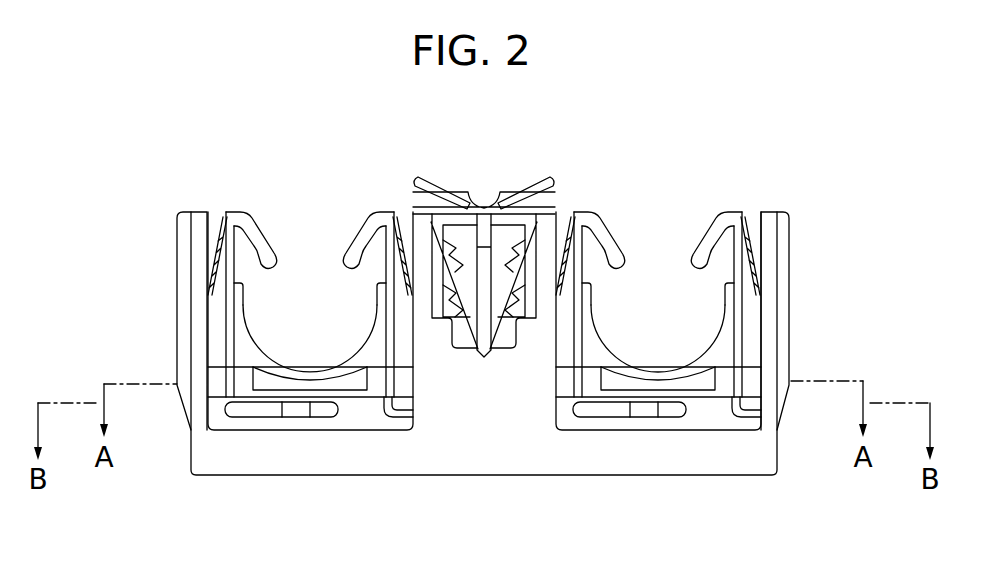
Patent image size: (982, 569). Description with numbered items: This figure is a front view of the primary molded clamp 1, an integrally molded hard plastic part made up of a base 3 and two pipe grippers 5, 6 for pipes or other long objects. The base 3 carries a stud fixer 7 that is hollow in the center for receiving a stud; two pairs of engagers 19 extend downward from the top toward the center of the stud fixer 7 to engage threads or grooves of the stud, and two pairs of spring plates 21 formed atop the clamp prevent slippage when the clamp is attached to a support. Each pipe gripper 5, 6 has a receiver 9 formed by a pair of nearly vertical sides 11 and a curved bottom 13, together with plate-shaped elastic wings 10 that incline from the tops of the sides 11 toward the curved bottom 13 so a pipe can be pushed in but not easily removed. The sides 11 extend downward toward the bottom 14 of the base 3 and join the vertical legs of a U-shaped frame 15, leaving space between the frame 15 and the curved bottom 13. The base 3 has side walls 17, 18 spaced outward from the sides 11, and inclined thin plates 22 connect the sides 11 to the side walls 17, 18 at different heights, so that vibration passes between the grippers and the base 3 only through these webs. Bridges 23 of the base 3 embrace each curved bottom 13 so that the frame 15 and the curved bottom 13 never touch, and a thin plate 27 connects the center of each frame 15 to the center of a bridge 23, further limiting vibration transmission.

The primary molded clamp 1 is at (860, 221).
The base 3 is at (690, 487).
The pipe gripper 5 is at (298, 178).
The pipe gripper 6 is at (672, 193).
The stud fixer 7 is at (492, 178).
The receiver 9 is at (299, 277).
The elastic wings 10 is at (263, 238).
The sides 11 is at (235, 257).
The curved bottom 13 is at (272, 360).
The bottom 14 is at (227, 463).
The U-shaped frame 15 is at (227, 333).
The side wall 17 is at (198, 232).
The side wall 18 is at (410, 245).
The engagers 19 is at (485, 356).
The spring plates 21 is at (457, 188).
The thin plates 22 is at (215, 268).
The bridge 23 is at (327, 393).
The thin plate 27 is at (300, 403).